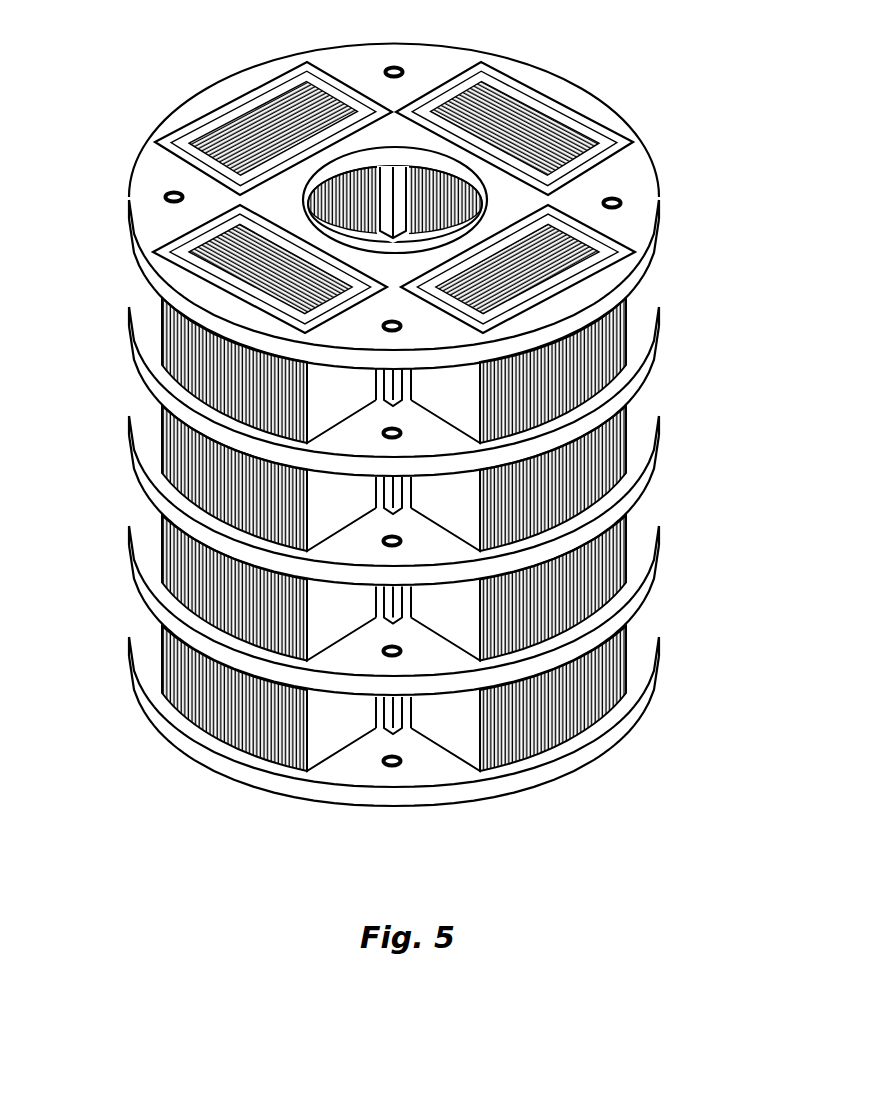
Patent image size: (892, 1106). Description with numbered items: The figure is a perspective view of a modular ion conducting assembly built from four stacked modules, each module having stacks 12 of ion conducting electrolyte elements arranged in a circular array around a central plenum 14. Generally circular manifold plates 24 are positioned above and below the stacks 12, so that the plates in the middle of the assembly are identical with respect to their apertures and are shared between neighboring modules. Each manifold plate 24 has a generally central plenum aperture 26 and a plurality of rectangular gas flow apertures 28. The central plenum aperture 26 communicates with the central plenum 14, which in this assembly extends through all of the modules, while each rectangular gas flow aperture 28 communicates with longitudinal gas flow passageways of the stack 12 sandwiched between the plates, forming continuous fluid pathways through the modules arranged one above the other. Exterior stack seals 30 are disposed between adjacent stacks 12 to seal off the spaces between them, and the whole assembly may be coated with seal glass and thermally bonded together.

The stack 12 is at (630, 331).
The central plenum 14 is at (385, 241).
The manifold plate 24 is at (217, 98).
The central plenum aperture 26 is at (478, 207).
The rectangular gas flow aperture 28 is at (503, 90).
The exterior stack seal 30 is at (401, 715).